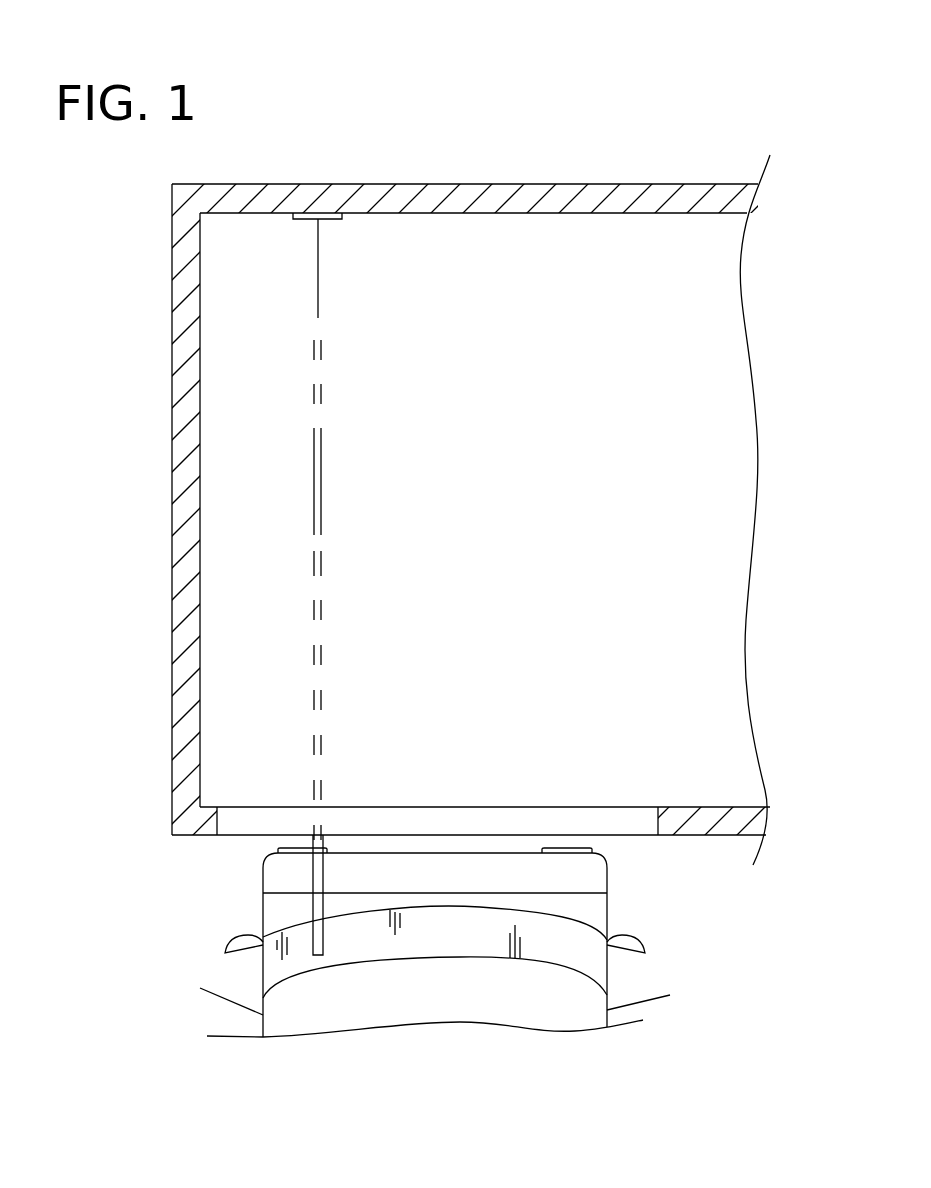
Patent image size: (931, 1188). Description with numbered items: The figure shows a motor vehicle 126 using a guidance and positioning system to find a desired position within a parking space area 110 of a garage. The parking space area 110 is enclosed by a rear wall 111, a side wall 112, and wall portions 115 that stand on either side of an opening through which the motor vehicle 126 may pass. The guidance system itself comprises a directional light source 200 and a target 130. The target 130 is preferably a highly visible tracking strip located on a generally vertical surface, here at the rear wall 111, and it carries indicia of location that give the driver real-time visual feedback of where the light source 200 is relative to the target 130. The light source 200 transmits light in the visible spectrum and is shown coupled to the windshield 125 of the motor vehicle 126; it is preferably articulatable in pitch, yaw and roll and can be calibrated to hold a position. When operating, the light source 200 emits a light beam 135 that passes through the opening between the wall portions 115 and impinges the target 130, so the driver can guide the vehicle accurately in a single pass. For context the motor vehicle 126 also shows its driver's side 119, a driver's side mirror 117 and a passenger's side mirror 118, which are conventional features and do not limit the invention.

The parking space area 110 is at (648, 497).
The rear wall 111 is at (522, 184).
The side wall 112 is at (172, 557).
The wall portions 115 is at (197, 835).
The driver's side mirror 117 is at (234, 937).
The passenger's side mirror 118 is at (628, 936).
The driver's side 119 is at (200, 988).
The windshield 125 is at (462, 942).
The motor vehicle 126 is at (670, 995).
The target 130 is at (343, 217).
The light beam 135 is at (320, 548).
The directional light source 200 is at (318, 955).